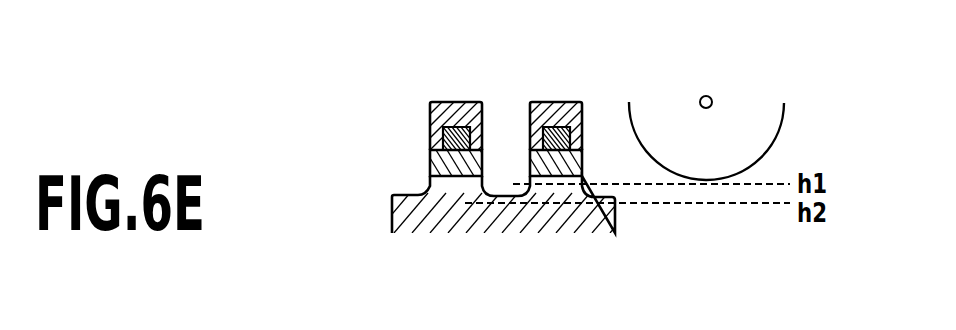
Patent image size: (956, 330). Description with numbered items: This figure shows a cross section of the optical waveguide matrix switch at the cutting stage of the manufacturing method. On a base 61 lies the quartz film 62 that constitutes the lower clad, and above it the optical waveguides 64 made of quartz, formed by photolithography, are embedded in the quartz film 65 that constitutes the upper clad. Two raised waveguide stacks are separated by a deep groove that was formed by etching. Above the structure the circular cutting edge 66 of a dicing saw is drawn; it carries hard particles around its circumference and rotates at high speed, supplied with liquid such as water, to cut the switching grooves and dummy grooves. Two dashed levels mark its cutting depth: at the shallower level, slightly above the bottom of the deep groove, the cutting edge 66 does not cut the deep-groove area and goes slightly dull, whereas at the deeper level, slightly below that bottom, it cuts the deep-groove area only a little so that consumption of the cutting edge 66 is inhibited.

The substrate 61 is at (412, 205).
The quartz film 62 is at (430, 165).
The optical waveguides 64 is at (454, 127).
The quartz film 65 is at (432, 131).
The cutting edge 66 is at (760, 130).